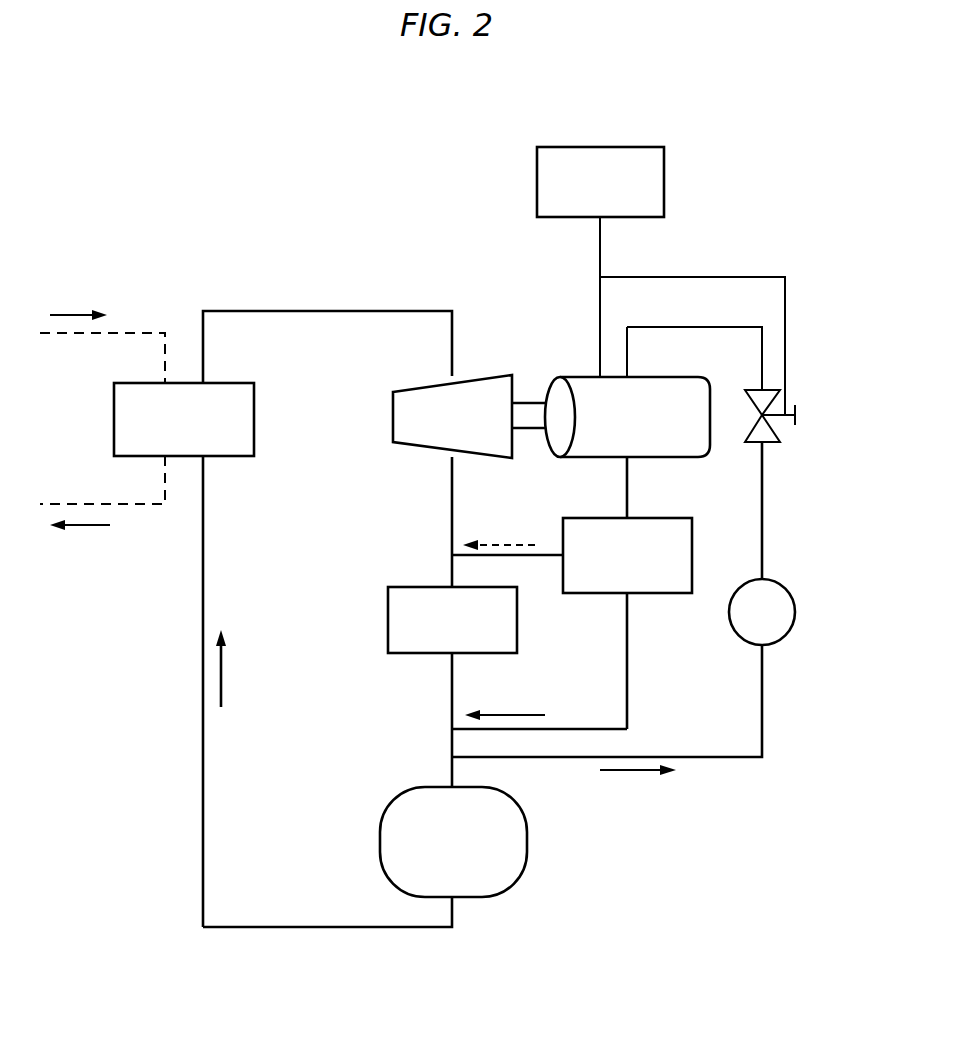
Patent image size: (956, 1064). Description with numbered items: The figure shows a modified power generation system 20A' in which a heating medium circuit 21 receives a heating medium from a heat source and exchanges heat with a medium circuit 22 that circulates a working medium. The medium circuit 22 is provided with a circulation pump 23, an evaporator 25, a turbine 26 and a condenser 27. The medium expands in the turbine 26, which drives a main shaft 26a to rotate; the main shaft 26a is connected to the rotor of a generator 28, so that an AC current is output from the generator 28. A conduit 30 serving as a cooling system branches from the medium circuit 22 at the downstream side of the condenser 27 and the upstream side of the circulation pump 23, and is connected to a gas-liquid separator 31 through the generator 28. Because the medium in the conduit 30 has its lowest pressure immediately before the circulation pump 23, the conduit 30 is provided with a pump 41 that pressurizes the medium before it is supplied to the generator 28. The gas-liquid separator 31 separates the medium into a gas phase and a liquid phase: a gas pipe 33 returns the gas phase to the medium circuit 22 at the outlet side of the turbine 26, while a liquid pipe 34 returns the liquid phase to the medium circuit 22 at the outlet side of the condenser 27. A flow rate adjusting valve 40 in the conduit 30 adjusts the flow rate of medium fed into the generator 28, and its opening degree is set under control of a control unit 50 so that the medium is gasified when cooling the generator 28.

The power generation system 20A' is at (435, 532).
The heating medium circuit 21 is at (140, 333).
The medium circuit 22 is at (280, 311).
The circulation pump 23 is at (403, 793).
The evaporator 25 is at (255, 412).
The turbine 26 is at (430, 388).
The main shaft 26a is at (537, 405).
The condenser 27 is at (420, 587).
The generator 28 is at (585, 377).
The conduit 30 is at (763, 723).
The gas-liquid separator 31 is at (653, 517).
The gas pipe 33 is at (547, 553).
The liquid pipe 34 is at (592, 717).
The flow rate adjusting valve 40 is at (776, 436).
The pump 41 is at (776, 587).
The control unit 50 is at (667, 180).